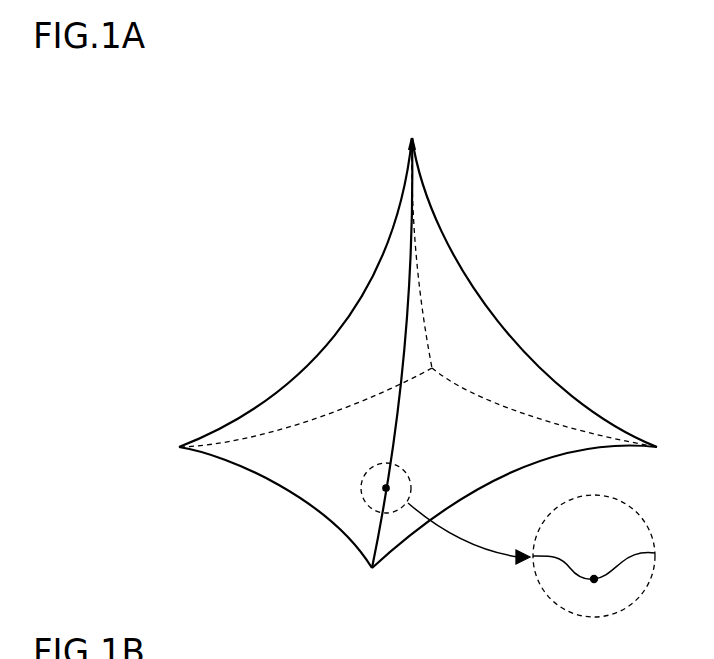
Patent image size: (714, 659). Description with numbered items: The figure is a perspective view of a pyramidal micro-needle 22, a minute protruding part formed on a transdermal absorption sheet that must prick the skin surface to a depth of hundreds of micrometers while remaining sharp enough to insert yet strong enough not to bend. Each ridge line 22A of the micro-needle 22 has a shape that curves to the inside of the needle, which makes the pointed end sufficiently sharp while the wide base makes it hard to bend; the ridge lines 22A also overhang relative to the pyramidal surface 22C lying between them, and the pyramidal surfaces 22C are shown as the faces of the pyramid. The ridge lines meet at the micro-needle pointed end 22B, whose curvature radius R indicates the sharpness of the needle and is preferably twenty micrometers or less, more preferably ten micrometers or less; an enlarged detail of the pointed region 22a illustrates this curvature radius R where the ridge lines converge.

The micro-needle 22 is at (520, 233).
The ridge line 22A is at (331, 334).
The micro-needle pointed end 22B is at (413, 136).
The pyramidal surface 22C is at (342, 365).
The junction point of edges 22a is at (384, 488).
The curvature radius R is at (594, 577).